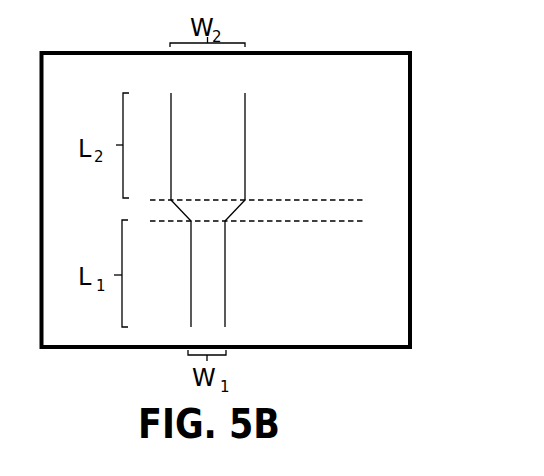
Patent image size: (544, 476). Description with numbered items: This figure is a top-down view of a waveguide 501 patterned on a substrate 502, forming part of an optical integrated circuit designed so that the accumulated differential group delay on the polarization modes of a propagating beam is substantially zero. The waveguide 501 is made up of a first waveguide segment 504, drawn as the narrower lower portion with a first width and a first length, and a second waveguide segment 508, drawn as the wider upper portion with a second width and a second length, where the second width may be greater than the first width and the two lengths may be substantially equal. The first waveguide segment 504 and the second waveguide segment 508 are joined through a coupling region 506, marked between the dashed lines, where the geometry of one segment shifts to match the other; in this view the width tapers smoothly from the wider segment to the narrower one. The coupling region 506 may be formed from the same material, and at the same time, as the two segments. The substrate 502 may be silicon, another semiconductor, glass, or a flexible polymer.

The waveguide 501 is at (264, 210).
The substrate 502 is at (100, 101).
The first waveguide segment 504 is at (224, 288).
The coupling region 506 is at (357, 211).
The second waveguide segment 508 is at (245, 105).